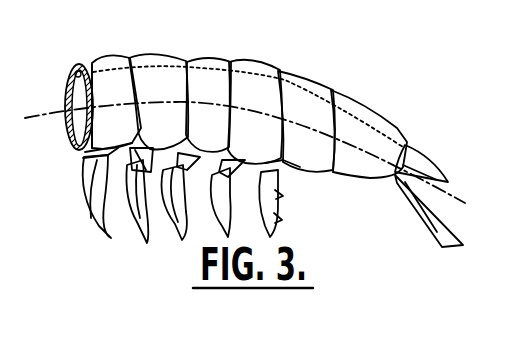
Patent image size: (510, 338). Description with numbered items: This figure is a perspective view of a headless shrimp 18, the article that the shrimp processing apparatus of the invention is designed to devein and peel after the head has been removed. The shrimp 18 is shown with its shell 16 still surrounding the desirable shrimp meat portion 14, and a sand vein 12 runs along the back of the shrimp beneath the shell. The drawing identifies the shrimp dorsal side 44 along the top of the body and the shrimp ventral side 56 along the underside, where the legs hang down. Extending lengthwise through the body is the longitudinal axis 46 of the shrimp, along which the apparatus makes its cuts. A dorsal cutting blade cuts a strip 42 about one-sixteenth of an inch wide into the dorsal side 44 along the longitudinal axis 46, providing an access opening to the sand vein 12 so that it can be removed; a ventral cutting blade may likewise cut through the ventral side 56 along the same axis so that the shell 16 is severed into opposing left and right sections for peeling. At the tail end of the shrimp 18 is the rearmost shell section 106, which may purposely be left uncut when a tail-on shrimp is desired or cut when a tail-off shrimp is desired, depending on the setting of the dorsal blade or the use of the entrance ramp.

The sand vein 12 is at (77, 72).
The shrimp meat portion 14 is at (75, 133).
The shell 16 is at (207, 62).
The shrimp 18 is at (328, 72).
The strip 42 is at (266, 68).
The shrimp dorsal side 44 is at (165, 50).
The longitudinal axis 46 is at (353, 143).
The shrimp ventral side 56 is at (128, 147).
The rearmost shell section 106 is at (398, 128).